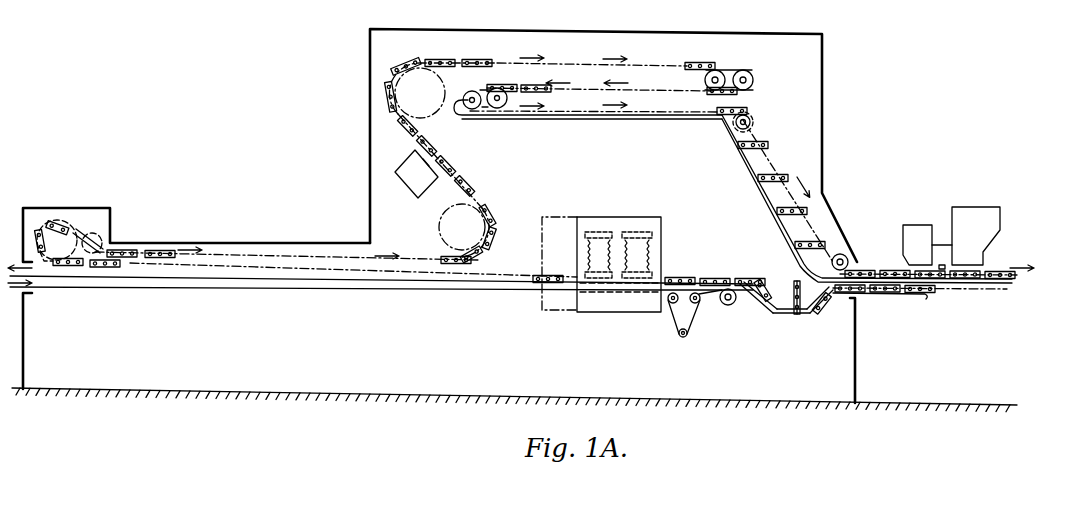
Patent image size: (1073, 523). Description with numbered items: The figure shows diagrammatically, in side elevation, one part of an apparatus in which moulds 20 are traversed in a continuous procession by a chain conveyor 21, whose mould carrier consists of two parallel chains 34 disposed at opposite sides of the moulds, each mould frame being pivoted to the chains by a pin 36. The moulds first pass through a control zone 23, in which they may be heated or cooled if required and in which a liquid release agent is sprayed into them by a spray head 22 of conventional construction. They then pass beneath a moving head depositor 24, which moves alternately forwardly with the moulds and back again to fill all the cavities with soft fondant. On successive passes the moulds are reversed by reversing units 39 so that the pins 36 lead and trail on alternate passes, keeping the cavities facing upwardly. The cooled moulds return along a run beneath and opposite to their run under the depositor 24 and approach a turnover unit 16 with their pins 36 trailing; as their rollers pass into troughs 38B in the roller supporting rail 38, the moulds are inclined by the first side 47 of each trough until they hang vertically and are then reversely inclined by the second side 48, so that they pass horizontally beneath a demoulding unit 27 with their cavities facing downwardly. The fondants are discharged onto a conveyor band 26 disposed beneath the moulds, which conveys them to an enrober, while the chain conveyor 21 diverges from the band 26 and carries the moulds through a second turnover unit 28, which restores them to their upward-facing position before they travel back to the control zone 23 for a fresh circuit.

The turnover unit 16 is at (803, 324).
The moulds 20 is at (140, 248).
The chain conveyor 21 is at (384, 256).
The spray head 22 is at (410, 181).
The control zone 23 is at (812, 88).
The moving head depositor 24 is at (975, 207).
The conveyor band 26 is at (350, 284).
The demoulding unit 27 is at (619, 211).
The second turnover unit 28 is at (77, 228).
The chains 34 is at (545, 62).
The pin 36 is at (493, 63).
The supporting rail 38 is at (914, 298).
The troughs 38B is at (783, 316).
The reversing units 39 is at (482, 109).
The first side 47 is at (827, 303).
The second side 48 is at (753, 300).